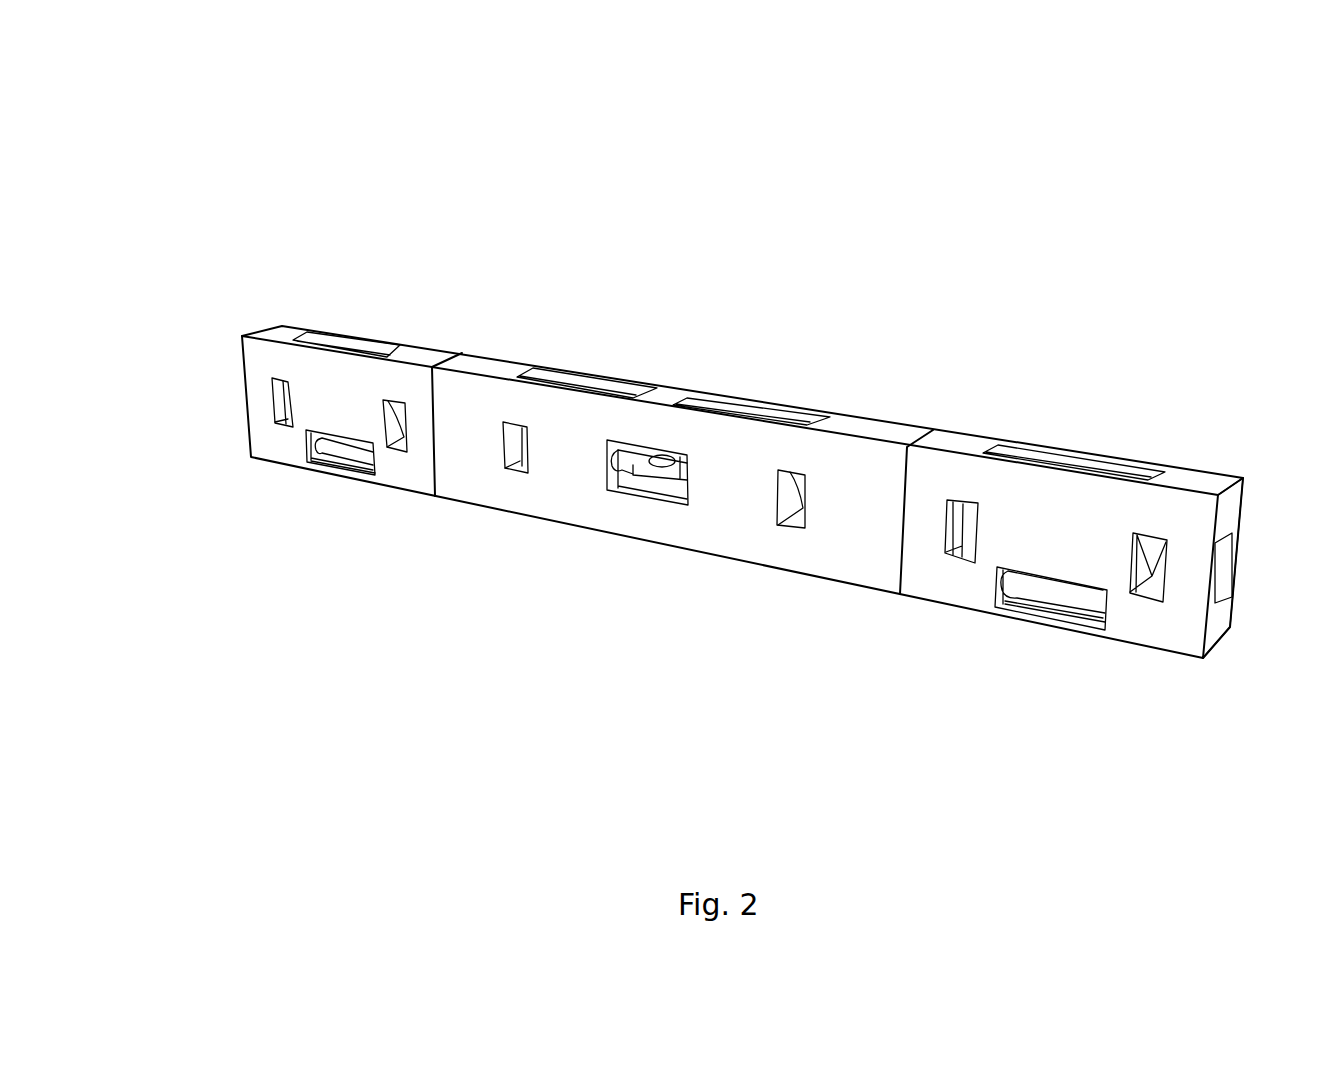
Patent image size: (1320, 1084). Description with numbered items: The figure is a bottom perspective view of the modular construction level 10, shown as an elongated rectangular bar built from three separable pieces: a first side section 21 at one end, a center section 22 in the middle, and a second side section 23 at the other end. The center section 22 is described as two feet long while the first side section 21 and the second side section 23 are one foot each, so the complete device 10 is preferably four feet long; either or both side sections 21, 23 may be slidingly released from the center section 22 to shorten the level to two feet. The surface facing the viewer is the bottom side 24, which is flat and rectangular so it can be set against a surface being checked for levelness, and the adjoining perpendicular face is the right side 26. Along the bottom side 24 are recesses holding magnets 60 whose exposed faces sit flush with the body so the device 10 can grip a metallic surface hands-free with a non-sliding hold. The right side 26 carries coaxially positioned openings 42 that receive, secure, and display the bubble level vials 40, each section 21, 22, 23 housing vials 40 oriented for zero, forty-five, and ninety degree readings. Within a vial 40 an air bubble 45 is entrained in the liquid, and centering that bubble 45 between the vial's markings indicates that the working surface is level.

The modular construction level 10 is at (1158, 170).
The first side section 21 is at (1198, 483).
The center section 22 is at (853, 432).
The second side section 23 is at (270, 334).
The bottom side 24 is at (732, 368).
The right side 26 is at (847, 540).
The bubble level vial 40 is at (627, 463).
The openings 42 is at (340, 463).
The air bubble 45 is at (658, 466).
The magnets 60 is at (355, 347).